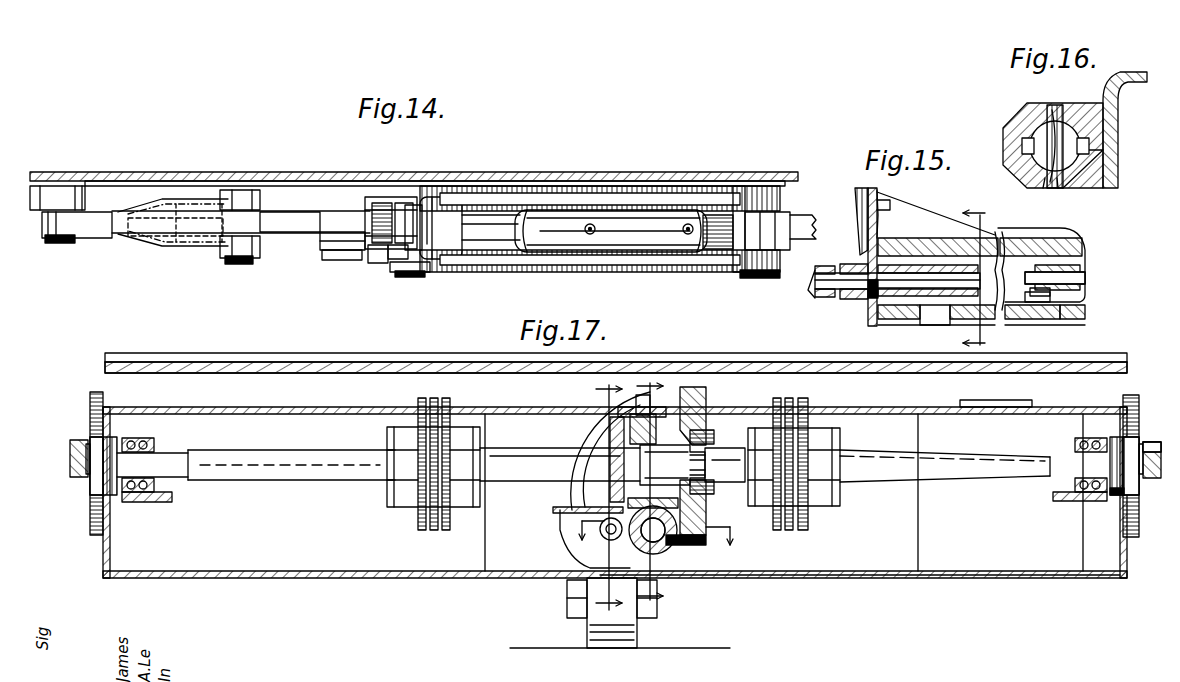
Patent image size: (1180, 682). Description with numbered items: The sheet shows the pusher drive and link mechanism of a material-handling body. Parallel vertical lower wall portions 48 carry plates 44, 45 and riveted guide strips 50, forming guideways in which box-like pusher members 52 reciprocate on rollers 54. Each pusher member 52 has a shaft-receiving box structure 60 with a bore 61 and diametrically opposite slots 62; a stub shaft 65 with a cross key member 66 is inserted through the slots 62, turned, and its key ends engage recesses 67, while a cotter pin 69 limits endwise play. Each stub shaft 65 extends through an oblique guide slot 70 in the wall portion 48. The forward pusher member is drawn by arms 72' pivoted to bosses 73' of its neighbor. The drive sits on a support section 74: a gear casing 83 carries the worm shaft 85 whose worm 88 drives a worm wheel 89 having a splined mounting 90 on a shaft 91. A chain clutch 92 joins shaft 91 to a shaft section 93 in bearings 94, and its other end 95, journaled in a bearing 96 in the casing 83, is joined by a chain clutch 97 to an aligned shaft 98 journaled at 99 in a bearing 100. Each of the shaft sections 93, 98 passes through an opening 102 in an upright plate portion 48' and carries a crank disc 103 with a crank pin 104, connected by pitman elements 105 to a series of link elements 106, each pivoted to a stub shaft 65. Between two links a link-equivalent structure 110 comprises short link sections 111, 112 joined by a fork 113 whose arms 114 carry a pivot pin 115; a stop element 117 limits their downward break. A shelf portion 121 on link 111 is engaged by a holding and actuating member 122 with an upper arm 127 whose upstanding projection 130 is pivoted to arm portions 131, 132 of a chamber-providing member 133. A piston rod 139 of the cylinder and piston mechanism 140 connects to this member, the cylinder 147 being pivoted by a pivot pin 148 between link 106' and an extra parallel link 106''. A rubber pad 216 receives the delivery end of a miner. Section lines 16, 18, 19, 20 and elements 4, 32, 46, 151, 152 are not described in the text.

In FIG. 17, the pedestal 4 is at (618, 636).
In FIG. 15, the section line 16 is at (965, 277).
In FIG. 17, the section line 18 is at (607, 494).
In FIG. 17, the section line 19 is at (667, 543).
In FIG. 17, the section line 20 is at (662, 488).
In FIG. 15, the bracket 32 is at (872, 212).
In FIG. 15, the plate 44 is at (906, 244).
In FIG. 15, the plate 45 is at (1016, 320).
In FIG. 15, the base plate 46 is at (910, 320).
In FIG. 14, the lower wall portion 48 is at (414, 166).
In FIG. 15, the lower wall portion 48 is at (854, 257).
In FIG. 17, the upright plate portion 48' is at (612, 489).
In FIG. 15, the guide strip 50 is at (858, 190).
In FIG. 15, the pusher member 52 is at (1070, 240).
In FIG. 16, the pusher member 52 is at (1120, 104).
In FIG. 15, the roller 54 is at (1040, 305).
In FIG. 15, the shaft-receiving box structure 60 is at (932, 322).
In FIG. 16, the shaft-receiving box structure 60 is at (1086, 180).
In FIG. 16, the bore 61 is at (1031, 193).
In FIG. 16, the slot 62 is at (1026, 145).
In FIG. 15, the stub shaft 65 is at (873, 300).
In FIG. 16, the stub shaft 65 is at (1040, 130).
In FIG. 15, the cross key member 66 is at (958, 268).
In FIG. 16, the cross key member 66 is at (1058, 125).
In FIG. 16, the recess 67 is at (1057, 193).
In FIG. 15, the cotter pin 69 is at (812, 296).
In FIG. 15, the oblique guide slot 70 is at (866, 298).
In FIG. 15, the arm 72' is at (1078, 301).
In FIG. 15, the boss 73' is at (1078, 266).
In FIG. 17, the support or platform section 74 is at (890, 578).
In FIG. 17, the gear casing 83 is at (618, 408).
In FIG. 17, the worm shaft 85 is at (694, 522).
In FIG. 17, the worm 88 is at (665, 546).
In FIG. 17, the worm wheel 89 is at (644, 412).
In FIG. 17, the splined mounting 90 is at (638, 468).
In FIG. 17, the shaft 91 is at (516, 474).
In FIG. 17, the chain clutch 92 is at (420, 520).
In FIG. 17, the shaft section 93 is at (328, 468).
In FIG. 17, the bearing 94 is at (147, 503).
In FIG. 17, the shaft end 95 is at (718, 458).
In FIG. 17, the bearing 96 is at (706, 425).
In FIG. 17, the chain clutch 97 is at (800, 522).
In FIG. 17, the shaft 98 is at (962, 468).
In FIG. 17, the journaled end 99 is at (1088, 438).
In FIG. 17, the bearing 100 is at (1083, 500).
In FIG. 17, the opening 102 is at (104, 492).
In FIG. 17, the crank disc 103 is at (96, 405).
In FIG. 17, the crank pin 104 is at (88, 444).
In FIG. 15, the pitman element 105 is at (830, 300).
In FIG. 17, the pitman element 105 is at (72, 462).
In FIG. 14, the link element 106 is at (426, 198).
In FIG. 15, the link element 106 is at (847, 258).
In FIG. 14, the link 106' is at (600, 179).
In FIG. 14, the extra parallel link 106'' is at (600, 275).
In FIG. 14, the link-equivalent structure 110 is at (275, 236).
In FIG. 14, the short link section 111 is at (294, 228).
In FIG. 14, the short link section 112 is at (107, 232).
In FIG. 14, the fork 113 is at (190, 243).
In FIG. 14, the fork arm 114 is at (245, 240).
In FIG. 14, the pivot pin 115 is at (240, 257).
In FIG. 14, the stop element 117 is at (166, 226).
In FIG. 14, the shelf portion 121 is at (338, 233).
In FIG. 14, the holding and actuating member 122 is at (400, 274).
In FIG. 14, the upper arm 127 is at (334, 258).
In FIG. 14, the upstanding projection 130 is at (372, 252).
In FIG. 14, the arm portion 131 is at (386, 202).
In FIG. 14, the arm portion 132 is at (380, 260).
In FIG. 14, the chamber-providing member 133 is at (443, 204).
In FIG. 14, the piston rod 139 is at (503, 243).
In FIG. 14, the cylinder and piston mechanism 140 is at (548, 256).
In FIG. 14, the cylinder 147 is at (608, 240).
In FIG. 14, the pivot pin 148 is at (716, 254).
In FIG. 14, the pin 151 is at (591, 224).
In FIG. 14, the pin 152 is at (690, 224).
In FIG. 17, the rubber pad 216 is at (747, 364).